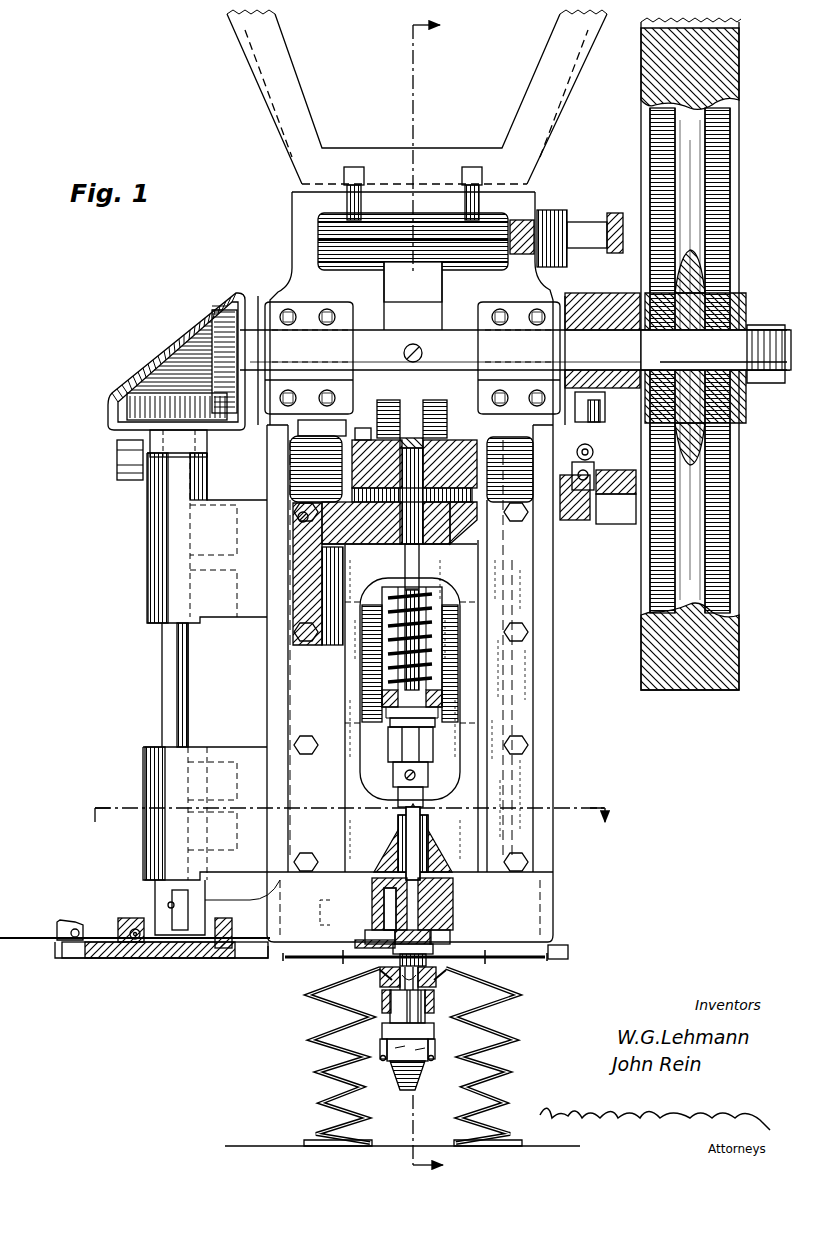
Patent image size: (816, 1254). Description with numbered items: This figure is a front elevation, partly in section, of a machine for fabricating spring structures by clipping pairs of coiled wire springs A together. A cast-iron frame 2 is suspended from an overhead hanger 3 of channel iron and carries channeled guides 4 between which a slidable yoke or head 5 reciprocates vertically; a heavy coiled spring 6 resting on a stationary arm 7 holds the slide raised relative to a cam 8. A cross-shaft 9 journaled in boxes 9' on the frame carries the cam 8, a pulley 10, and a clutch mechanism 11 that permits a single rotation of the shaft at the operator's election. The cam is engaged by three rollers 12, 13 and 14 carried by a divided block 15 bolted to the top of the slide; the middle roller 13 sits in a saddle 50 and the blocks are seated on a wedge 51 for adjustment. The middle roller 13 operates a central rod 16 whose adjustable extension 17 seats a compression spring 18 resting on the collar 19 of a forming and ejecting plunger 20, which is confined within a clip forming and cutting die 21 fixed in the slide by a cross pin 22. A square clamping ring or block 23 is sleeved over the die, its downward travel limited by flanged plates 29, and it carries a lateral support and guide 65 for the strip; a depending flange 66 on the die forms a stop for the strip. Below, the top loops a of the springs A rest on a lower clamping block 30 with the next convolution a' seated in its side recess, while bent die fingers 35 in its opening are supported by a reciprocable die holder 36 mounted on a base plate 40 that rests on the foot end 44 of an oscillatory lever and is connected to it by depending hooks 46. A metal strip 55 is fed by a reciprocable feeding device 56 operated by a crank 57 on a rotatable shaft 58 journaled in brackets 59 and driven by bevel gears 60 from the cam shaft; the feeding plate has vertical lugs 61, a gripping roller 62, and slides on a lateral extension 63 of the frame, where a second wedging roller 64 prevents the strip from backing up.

The frame 2 is at (566, 712).
The hanger 3 is at (530, 82).
The channeled guides 4 is at (348, 687).
The slidable yoke or head 5 is at (428, 755).
The coiled spring 6 is at (435, 592).
The stationary arm 7 is at (366, 684).
The cam 8 is at (470, 290).
The cross-shaft 9 is at (412, 358).
The boxes 9' is at (413, 346).
The pulley 10 is at (736, 276).
The clutch mechanism 11 is at (606, 285).
The roller 12 is at (378, 430).
The middle roller 13 is at (444, 420).
The roller 14 is at (448, 440).
The divided block 15 is at (478, 440).
The central rod 16 is at (410, 545).
The adjustable extension 17 is at (424, 784).
The compression spring 18 is at (392, 832).
The collar 19 is at (385, 846).
The forming and ejecting plunger 20 is at (410, 907).
The clip forming and cutting die 21 is at (454, 914).
The cross pin 22 is at (445, 856).
The square clamping ring or block 23 is at (450, 934).
The flanged plates 29 is at (374, 910).
The lower clamping block 30 is at (384, 983).
The bent die members or fingers 35 is at (396, 1006).
The reciprocable die holder 36 is at (400, 1021).
The base plate 40 is at (428, 1040).
The foot end 44 is at (423, 1080).
The depending hooks 46 is at (386, 1062).
The saddle 50 is at (350, 432).
The wedge 51 is at (298, 482).
The metal strip 55 is at (135, 927).
The feeding device 56 is at (140, 958).
The crank 57 is at (217, 907).
The rotatable shaft 58 is at (188, 700).
The brackets 59 is at (146, 582).
The bevel gears 60 is at (222, 430).
The vertical lugs 61 is at (116, 924).
The gripping roller 62 is at (135, 928).
The lateral extension 63 is at (202, 958).
The second wedging roller 64 is at (71, 918).
The lateral support and guide 65 is at (365, 940).
The depending flange 66 is at (440, 946).
The top loops a is at (421, 963).
The sub-coil or convolution a' is at (420, 984).
The wire springs A is at (311, 1040).